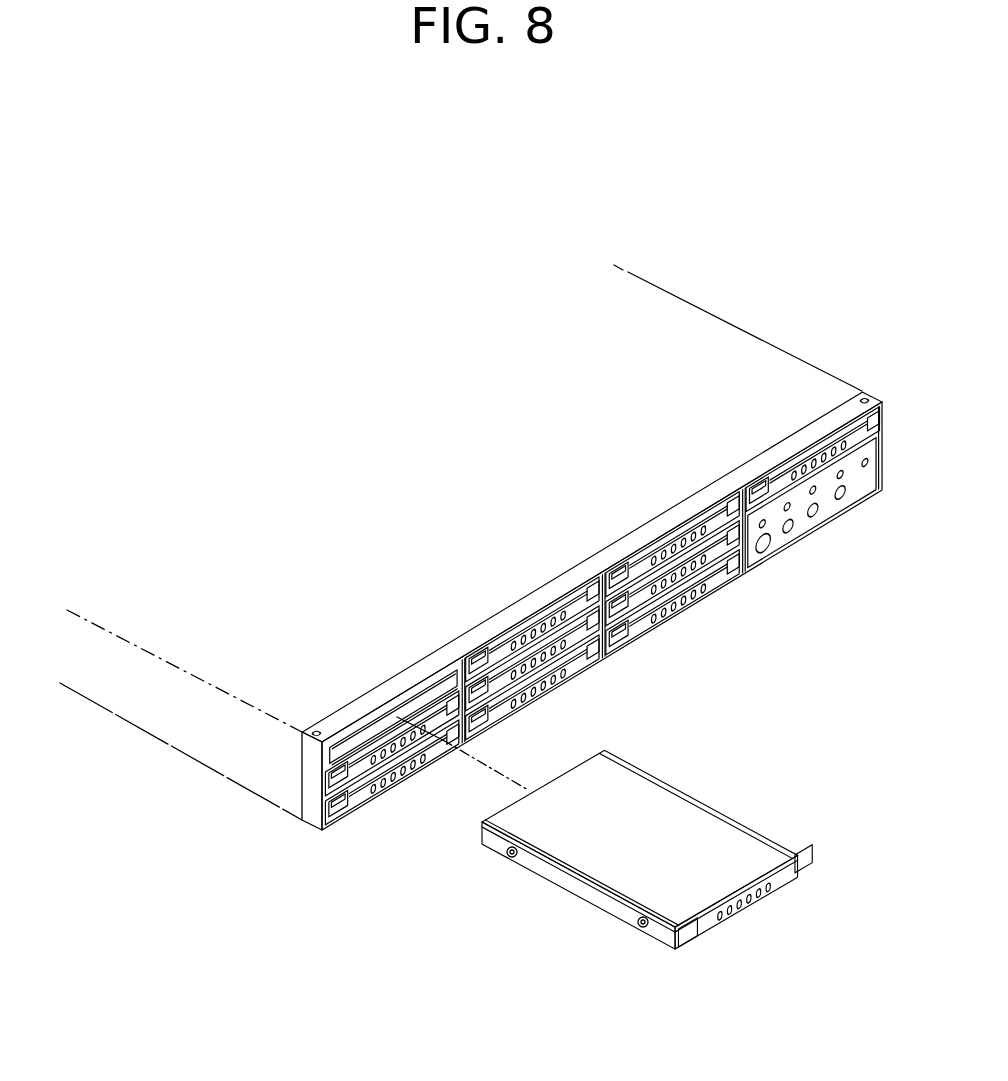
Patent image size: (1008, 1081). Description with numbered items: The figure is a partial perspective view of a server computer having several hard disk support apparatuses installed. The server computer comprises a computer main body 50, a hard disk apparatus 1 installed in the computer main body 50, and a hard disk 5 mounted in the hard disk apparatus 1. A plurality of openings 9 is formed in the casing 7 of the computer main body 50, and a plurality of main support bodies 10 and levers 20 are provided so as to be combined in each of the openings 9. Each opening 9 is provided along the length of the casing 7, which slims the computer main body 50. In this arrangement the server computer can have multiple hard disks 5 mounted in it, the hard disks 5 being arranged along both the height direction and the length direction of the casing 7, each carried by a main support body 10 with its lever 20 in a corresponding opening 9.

The hard disk apparatus 1 is at (647, 895).
The hard disk 5 is at (703, 815).
The casing 7 is at (433, 672).
The opening 9 is at (370, 723).
The main support body 10 is at (618, 913).
The lever 20 is at (743, 926).
The computer main body 50 is at (471, 613).